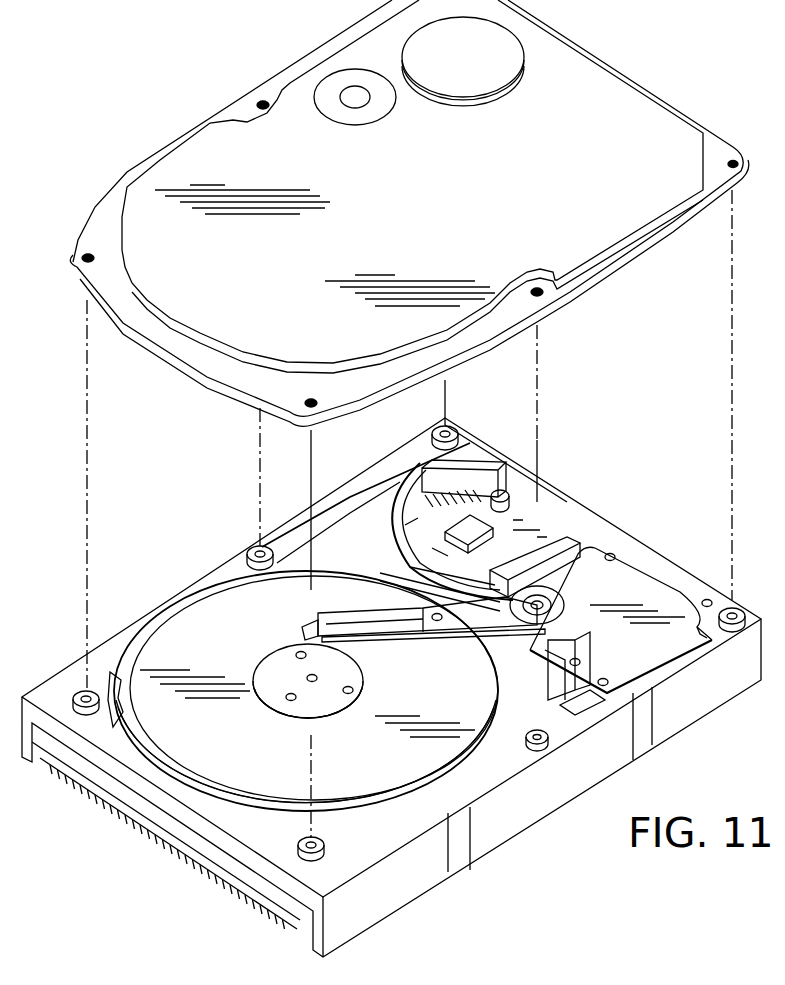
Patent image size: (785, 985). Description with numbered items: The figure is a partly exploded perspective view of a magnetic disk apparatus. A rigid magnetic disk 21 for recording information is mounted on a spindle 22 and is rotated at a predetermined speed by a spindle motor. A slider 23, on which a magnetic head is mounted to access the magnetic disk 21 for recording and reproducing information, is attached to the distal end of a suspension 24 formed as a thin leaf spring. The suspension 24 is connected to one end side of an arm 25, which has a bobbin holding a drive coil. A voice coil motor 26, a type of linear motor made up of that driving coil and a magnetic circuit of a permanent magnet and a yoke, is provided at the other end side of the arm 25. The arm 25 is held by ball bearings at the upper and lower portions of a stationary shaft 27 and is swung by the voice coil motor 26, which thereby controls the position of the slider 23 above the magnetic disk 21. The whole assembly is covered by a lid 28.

The magnetic disk 21 is at (178, 616).
The spindle 22 is at (270, 687).
The slider 23 is at (310, 625).
The suspension 24 is at (395, 627).
The arm 25 is at (447, 632).
The voice coil motor 26 is at (665, 590).
The stationary shaft 27 is at (587, 610).
The lid 28 is at (620, 96).